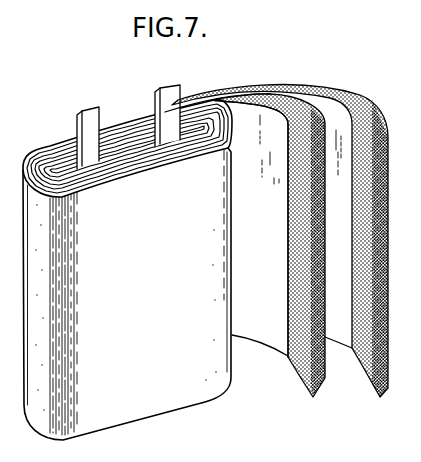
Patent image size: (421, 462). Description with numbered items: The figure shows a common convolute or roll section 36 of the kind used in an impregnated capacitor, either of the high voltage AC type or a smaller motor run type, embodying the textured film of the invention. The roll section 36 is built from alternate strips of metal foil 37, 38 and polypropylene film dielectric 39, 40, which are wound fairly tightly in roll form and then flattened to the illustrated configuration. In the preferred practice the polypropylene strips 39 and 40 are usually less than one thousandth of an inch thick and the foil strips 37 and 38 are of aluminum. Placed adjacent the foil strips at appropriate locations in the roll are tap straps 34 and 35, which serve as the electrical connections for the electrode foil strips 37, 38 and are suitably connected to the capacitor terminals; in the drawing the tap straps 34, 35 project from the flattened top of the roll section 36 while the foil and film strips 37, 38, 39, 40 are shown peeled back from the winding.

The tap strap 34 is at (87, 106).
The tap strap 35 is at (180, 87).
The roll section 36 is at (58, 126).
The metal foil strip 37 is at (253, 330).
The metal foil strip 38 is at (342, 325).
The polypropylene film dielectric 39 is at (318, 384).
The polypropylene film dielectric 40 is at (380, 384).